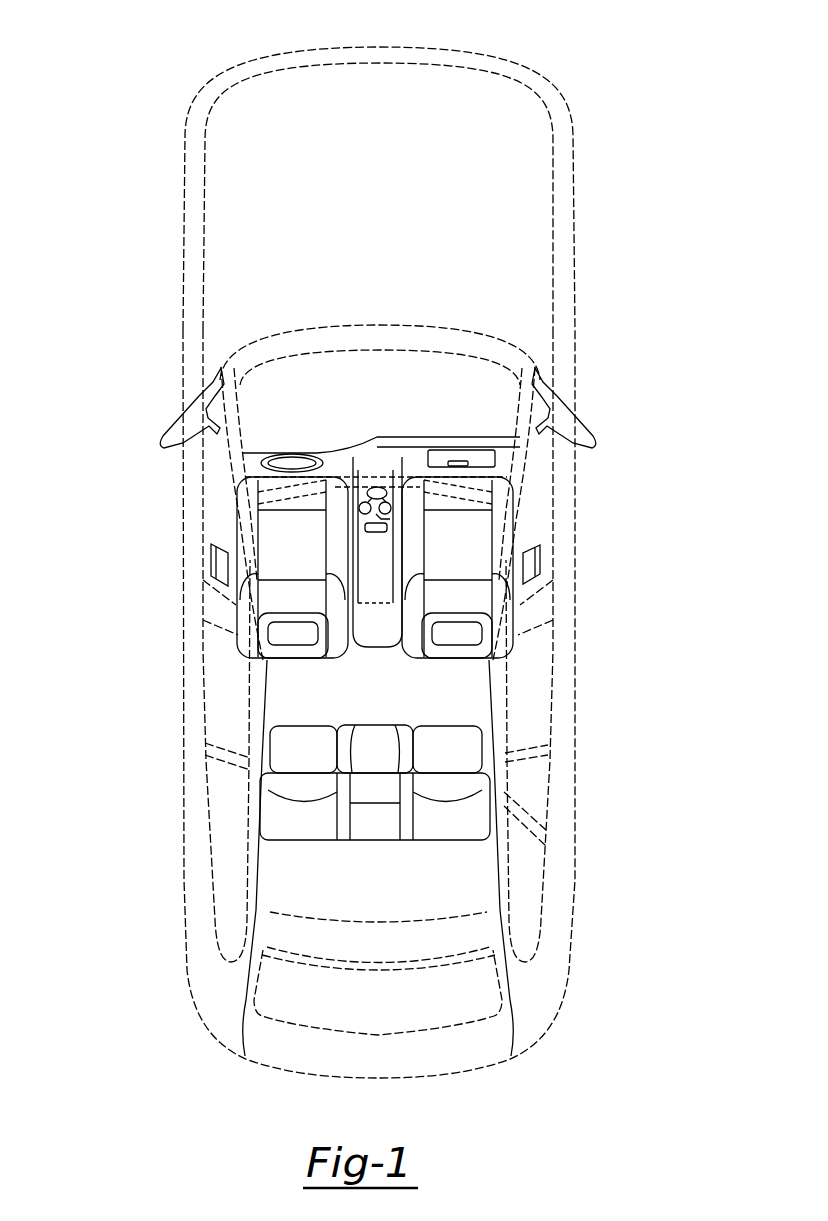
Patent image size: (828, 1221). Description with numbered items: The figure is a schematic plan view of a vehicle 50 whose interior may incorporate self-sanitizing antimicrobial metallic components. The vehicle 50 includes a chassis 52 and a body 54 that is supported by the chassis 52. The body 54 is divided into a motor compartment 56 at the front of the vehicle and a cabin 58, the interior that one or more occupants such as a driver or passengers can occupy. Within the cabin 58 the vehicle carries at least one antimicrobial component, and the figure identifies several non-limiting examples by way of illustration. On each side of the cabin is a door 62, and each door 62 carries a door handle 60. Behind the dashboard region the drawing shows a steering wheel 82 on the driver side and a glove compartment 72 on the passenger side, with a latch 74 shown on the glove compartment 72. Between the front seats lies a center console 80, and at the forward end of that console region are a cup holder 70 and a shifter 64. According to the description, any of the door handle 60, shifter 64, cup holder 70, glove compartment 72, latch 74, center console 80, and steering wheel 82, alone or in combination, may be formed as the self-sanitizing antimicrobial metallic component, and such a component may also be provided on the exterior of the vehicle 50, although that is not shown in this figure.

The vehicle 50 is at (170, 76).
The chassis 52 is at (183, 224).
The body 54 is at (575, 290).
The motor compartment 56 is at (502, 137).
The cabin 58 is at (522, 688).
The door handle 60 is at (210, 560).
The door 62 is at (222, 495).
The shifter 64 is at (390, 519).
The cup holder 70 is at (385, 500).
The glove compartment 72 is at (482, 460).
The latch 74 is at (455, 460).
The center console 80 is at (376, 532).
The steering wheel 82 is at (293, 456).